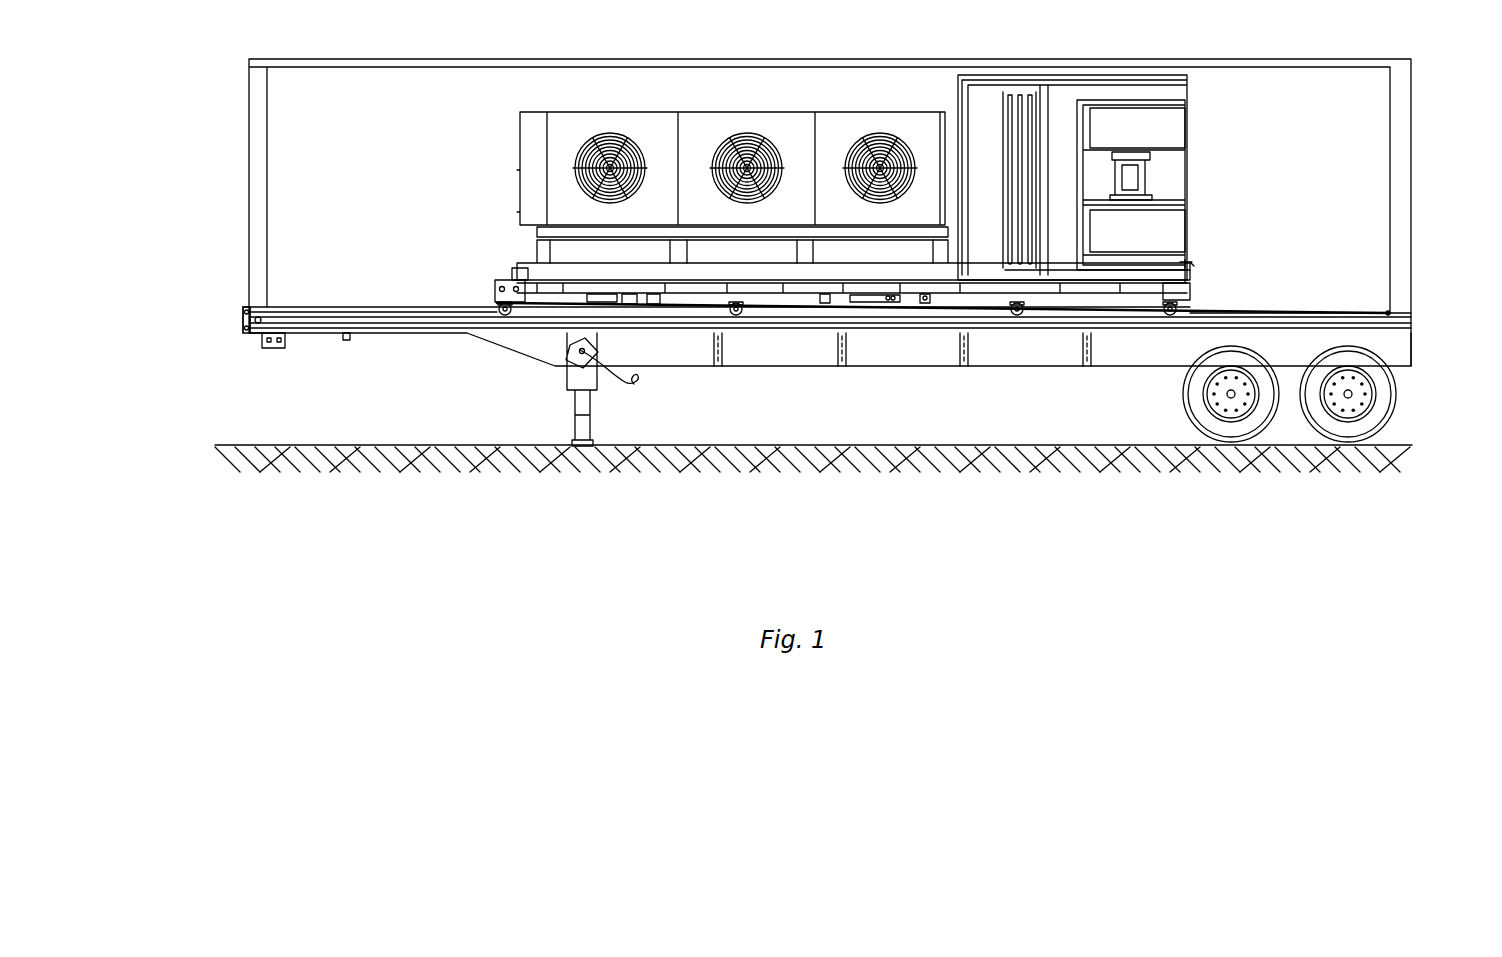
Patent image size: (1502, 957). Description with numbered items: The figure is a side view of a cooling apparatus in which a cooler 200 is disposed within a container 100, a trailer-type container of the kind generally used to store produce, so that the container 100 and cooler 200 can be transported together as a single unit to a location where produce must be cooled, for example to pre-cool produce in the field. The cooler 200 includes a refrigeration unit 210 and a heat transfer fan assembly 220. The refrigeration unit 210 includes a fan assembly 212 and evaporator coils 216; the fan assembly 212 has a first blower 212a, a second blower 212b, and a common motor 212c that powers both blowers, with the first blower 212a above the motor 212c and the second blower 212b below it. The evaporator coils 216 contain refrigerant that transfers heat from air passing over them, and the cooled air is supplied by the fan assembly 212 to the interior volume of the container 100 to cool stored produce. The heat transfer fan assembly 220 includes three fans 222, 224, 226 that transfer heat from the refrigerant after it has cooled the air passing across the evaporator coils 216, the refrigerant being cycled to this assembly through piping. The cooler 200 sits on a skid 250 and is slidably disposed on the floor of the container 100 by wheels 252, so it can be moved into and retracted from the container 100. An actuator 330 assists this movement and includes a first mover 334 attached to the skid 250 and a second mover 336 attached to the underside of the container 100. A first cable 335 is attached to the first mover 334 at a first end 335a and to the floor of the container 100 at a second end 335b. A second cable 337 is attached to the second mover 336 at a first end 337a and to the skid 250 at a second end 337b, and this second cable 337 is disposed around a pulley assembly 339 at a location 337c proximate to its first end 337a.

The container 100 is at (1420, 118).
The cooler 200 is at (1210, 117).
The refrigeration unit 210 is at (1072, 72).
The fan assembly 212 is at (1200, 138).
The first blower 212a is at (1165, 118).
The second blower 212b is at (1168, 220).
The common motor 212c is at (1150, 165).
The evaporator coils 216 is at (1005, 120).
The heat transfer fan assembly 220 is at (505, 118).
The fan 222 is at (610, 135).
The fan 224 is at (735, 135).
The fan 226 is at (872, 135).
The skid 250 is at (497, 282).
The wheels 252 is at (1178, 303).
The actuator 330 is at (684, 320).
The first mover 334 is at (493, 290).
The first cable 335 is at (780, 305).
The first end of first cable 335a is at (518, 268).
The second end of first cable 335b is at (1393, 310).
The second mover 336 is at (277, 348).
The second cable 337 is at (390, 312).
The first end of second cable 337a is at (263, 338).
The second end of second cable 337b is at (1195, 264).
The location on second cable 337c is at (247, 305).
The pulley assembly 339 is at (238, 316).